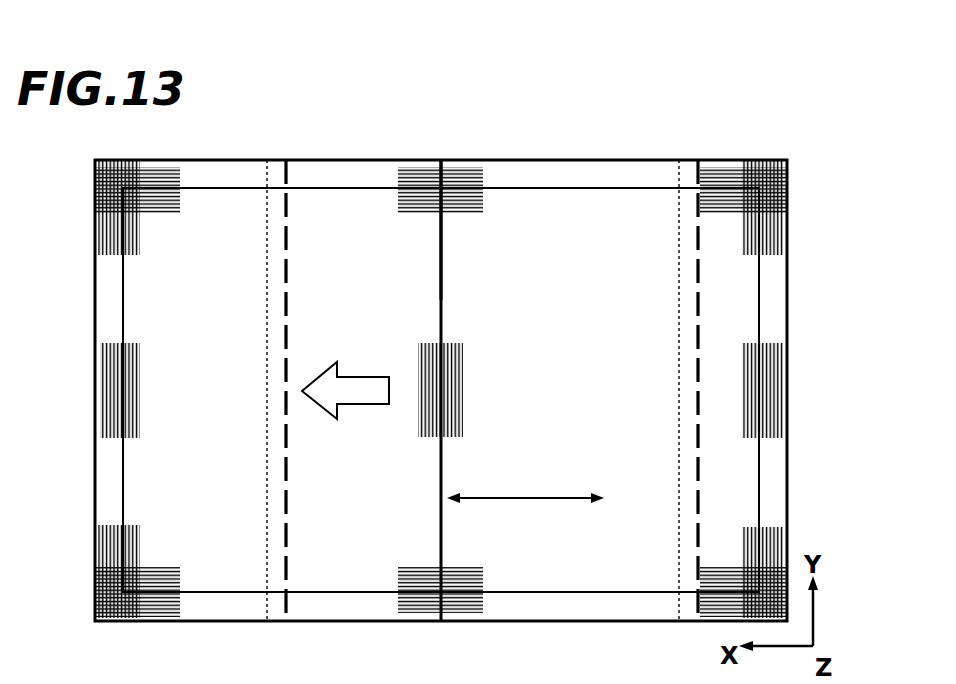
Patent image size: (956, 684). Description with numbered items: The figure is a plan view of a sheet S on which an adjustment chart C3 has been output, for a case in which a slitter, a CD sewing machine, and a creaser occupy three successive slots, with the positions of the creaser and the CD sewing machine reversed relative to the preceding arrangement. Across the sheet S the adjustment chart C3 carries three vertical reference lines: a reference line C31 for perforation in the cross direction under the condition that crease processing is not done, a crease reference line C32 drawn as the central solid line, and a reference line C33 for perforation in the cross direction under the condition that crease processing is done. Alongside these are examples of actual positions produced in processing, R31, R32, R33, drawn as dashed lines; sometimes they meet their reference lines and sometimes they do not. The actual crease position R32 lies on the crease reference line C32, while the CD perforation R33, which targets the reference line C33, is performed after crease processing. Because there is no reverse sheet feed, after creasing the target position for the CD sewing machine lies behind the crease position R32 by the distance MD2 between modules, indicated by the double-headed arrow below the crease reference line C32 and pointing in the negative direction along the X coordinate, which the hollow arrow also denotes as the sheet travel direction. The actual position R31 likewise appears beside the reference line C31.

The sheet S is at (572, 158).
The adjustment chart C3 is at (520, 173).
The reference line for perforation in the cross direction C31 is at (267, 230).
The actual position in processing R31 is at (287, 205).
The crease reference line C32 is at (441, 293).
The actual crease position R32 is at (443, 165).
The reference line for perforation in the cross direction C33 is at (679, 220).
The CD perforation processing position R33 is at (699, 167).
The distance between modules MD2 is at (525, 488).